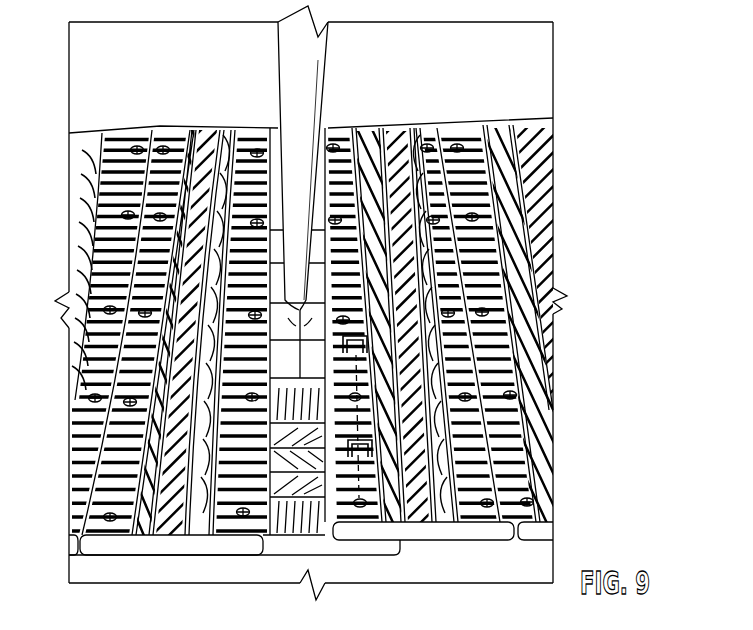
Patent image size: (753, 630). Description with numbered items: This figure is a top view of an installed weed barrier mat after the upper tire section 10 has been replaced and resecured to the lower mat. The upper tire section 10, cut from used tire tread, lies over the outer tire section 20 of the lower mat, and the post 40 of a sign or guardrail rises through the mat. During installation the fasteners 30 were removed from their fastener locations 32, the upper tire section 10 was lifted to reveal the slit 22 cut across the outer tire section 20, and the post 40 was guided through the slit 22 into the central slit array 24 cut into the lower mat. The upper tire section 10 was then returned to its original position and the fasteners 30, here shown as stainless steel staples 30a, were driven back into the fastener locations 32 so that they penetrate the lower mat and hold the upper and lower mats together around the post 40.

The upper tire section 10 is at (447, 515).
The outer tire section 20 is at (287, 513).
The slit 22 is at (420, 562).
The central slit array 24 is at (262, 327).
The fastener 30 is at (488, 503).
The stainless steel staple 30a is at (372, 442).
The fastener location 32 is at (358, 506).
The post 40 is at (303, 79).